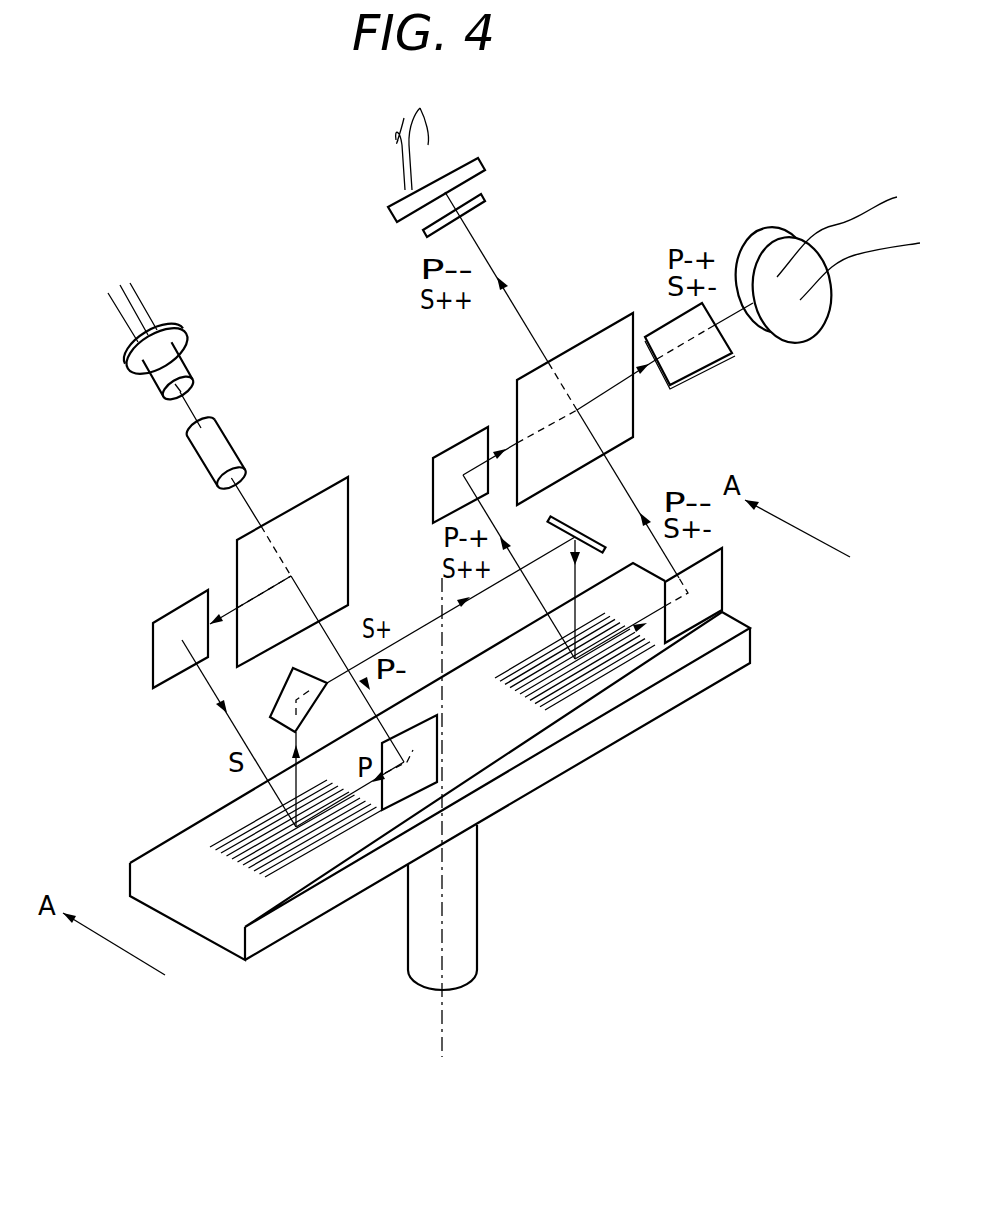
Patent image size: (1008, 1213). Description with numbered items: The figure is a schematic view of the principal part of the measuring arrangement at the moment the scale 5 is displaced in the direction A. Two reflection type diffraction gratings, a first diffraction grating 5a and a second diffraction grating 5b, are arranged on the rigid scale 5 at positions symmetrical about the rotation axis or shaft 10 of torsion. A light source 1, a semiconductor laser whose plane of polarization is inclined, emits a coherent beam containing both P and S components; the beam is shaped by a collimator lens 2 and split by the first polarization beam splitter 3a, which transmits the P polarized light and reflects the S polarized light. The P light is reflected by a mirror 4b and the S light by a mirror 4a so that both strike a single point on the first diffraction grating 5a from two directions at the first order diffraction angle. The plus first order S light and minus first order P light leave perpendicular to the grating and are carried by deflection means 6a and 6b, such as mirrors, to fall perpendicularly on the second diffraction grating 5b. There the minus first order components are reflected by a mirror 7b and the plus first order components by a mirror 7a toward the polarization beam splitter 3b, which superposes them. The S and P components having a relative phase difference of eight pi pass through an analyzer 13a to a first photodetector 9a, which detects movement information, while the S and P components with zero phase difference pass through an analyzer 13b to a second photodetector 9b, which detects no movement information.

The light source 1 is at (152, 388).
The collimator lens 2 is at (202, 452).
The first polarization beam splitter 3a is at (243, 570).
The polarization beam splitter 3b is at (523, 397).
The mirror 4a is at (160, 640).
The mirror 4b is at (398, 800).
The scale 5 is at (662, 702).
The first diffraction grating 5a is at (237, 833).
The second diffraction grating 5b is at (587, 688).
The deflection means 6a is at (275, 702).
The deflection means 6b is at (592, 533).
The mirror 7a is at (440, 487).
The mirror 7b is at (713, 582).
The first photodetector 9a is at (477, 162).
The second photodetector 9b is at (750, 257).
The rotation axis (shaft) 10 is at (460, 953).
The analyzer 13a is at (485, 198).
The analyzer 13b is at (708, 353).